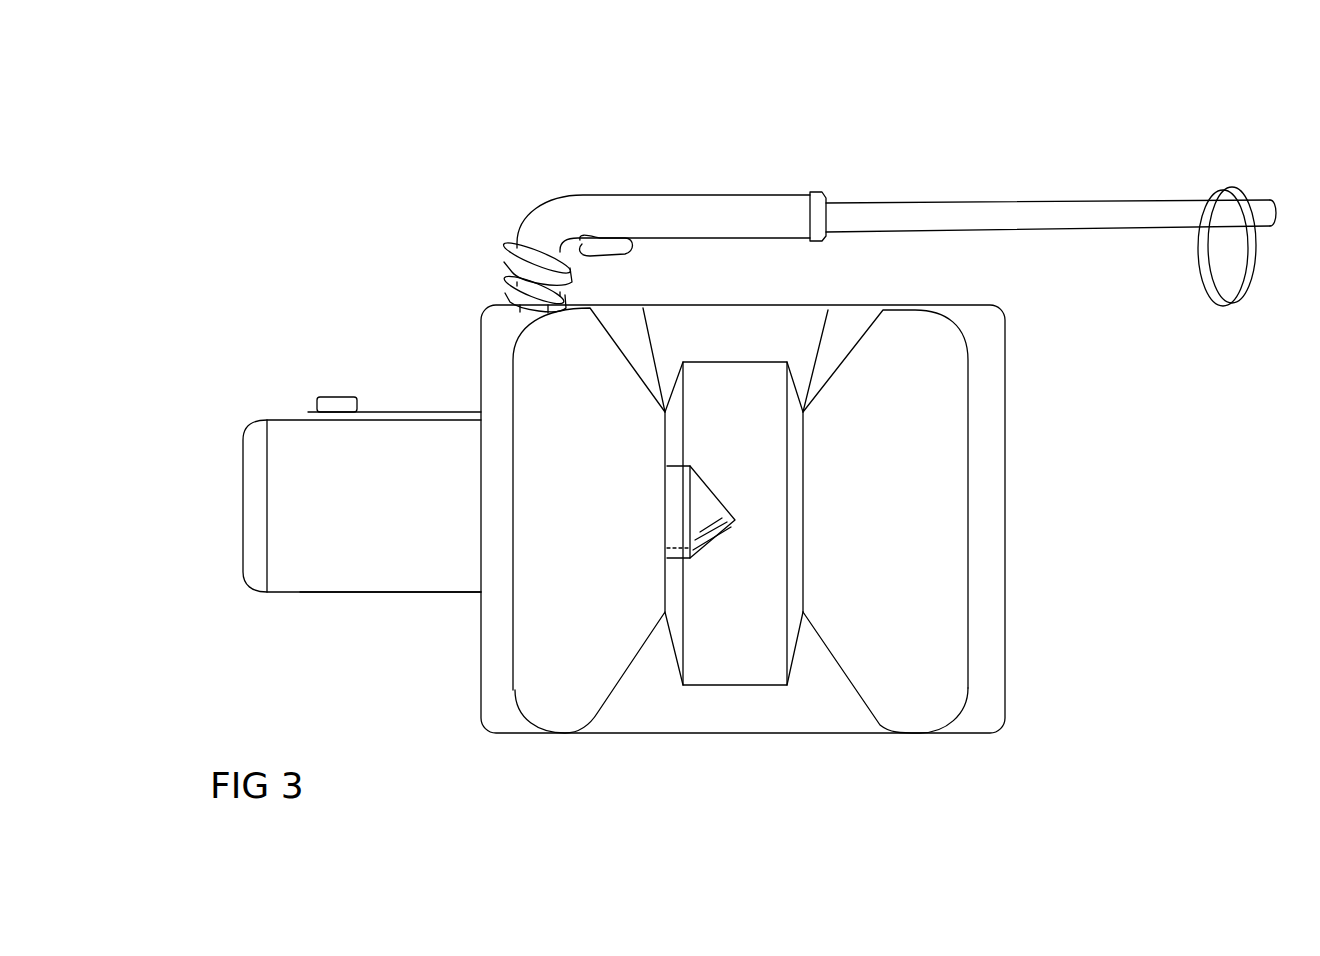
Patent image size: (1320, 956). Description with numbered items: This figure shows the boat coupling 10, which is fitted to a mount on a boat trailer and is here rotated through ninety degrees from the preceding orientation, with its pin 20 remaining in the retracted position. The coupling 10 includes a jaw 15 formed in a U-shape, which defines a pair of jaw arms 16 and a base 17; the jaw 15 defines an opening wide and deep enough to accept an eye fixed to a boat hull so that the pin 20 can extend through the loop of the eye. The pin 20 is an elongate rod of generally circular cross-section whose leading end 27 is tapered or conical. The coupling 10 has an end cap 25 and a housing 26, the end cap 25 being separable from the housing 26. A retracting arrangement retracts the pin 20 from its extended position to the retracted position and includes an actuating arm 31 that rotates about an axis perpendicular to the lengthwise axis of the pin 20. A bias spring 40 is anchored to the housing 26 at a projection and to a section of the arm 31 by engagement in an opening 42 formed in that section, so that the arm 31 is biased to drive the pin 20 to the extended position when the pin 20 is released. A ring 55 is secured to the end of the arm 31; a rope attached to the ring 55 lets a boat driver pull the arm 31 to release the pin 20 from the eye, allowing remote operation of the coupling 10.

The boat coupling 10 is at (333, 130).
The jaw 15 is at (588, 675).
The jaw arms 16 is at (503, 685).
The base 17 is at (752, 409).
The pin 20 is at (677, 488).
The end cap 25 is at (255, 477).
The housing 26 is at (335, 565).
The leading end 27 is at (710, 503).
The actuating arm 31 is at (1000, 212).
The bias spring 40 is at (520, 268).
The opening 42 is at (628, 233).
The ring 55 is at (1216, 304).